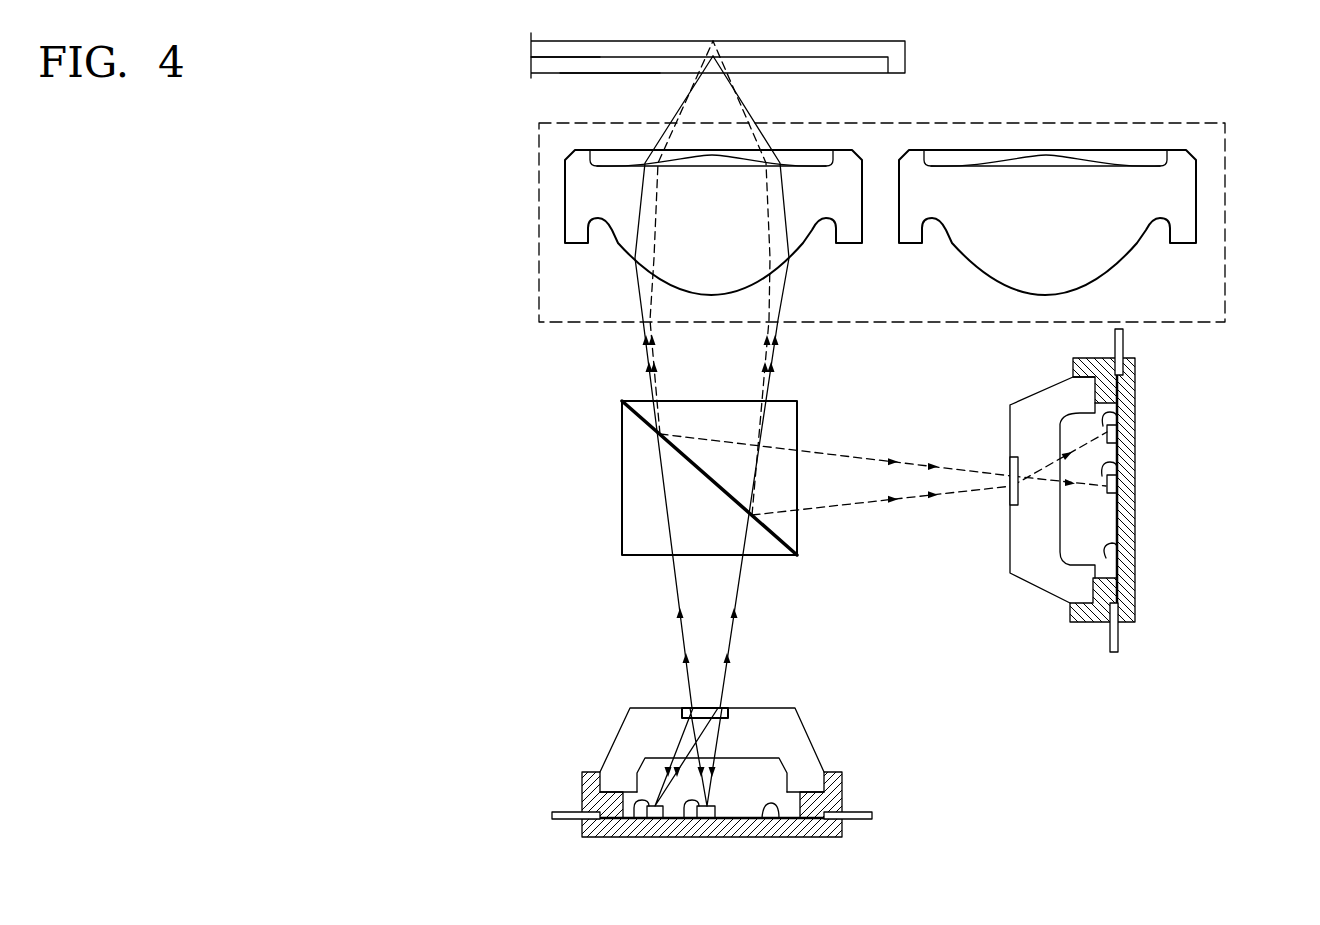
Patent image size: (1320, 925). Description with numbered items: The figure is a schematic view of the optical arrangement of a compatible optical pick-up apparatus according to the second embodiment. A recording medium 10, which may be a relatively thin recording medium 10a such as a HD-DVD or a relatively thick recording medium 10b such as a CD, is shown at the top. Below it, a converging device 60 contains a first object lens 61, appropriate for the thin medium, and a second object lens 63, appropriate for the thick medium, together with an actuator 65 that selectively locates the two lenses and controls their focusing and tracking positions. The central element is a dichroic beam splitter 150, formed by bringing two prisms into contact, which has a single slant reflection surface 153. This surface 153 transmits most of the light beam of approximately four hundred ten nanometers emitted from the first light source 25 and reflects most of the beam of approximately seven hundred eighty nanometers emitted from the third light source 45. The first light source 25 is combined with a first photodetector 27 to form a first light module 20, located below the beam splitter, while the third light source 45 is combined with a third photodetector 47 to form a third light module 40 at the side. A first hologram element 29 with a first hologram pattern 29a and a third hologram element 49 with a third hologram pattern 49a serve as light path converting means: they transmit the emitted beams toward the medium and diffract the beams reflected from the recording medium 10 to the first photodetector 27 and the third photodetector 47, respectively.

The recording medium 10 is at (732, 57).
The relatively thin recording medium 10a is at (607, 64).
The relatively thick recording medium 10b is at (551, 50).
The first light module 20 is at (688, 766).
The first light source 25 is at (722, 823).
The first photodetector 27 is at (655, 818).
The first hologram element 29 is at (707, 717).
The first hologram pattern 29a is at (727, 706).
The third light module 40 is at (1063, 490).
The third light source 45 is at (1120, 485).
The third photodetector 47 is at (1118, 433).
The third hologram element 49 is at (1010, 490).
The third hologram pattern 49a is at (1019, 503).
The converging device 60 is at (882, 191).
The first object lens 61 is at (565, 197).
The second object lens 63 is at (1198, 200).
The actuator 65 is at (1226, 247).
The dichroic beam splitter 150 is at (718, 447).
The slant reflection surface 153 is at (634, 415).